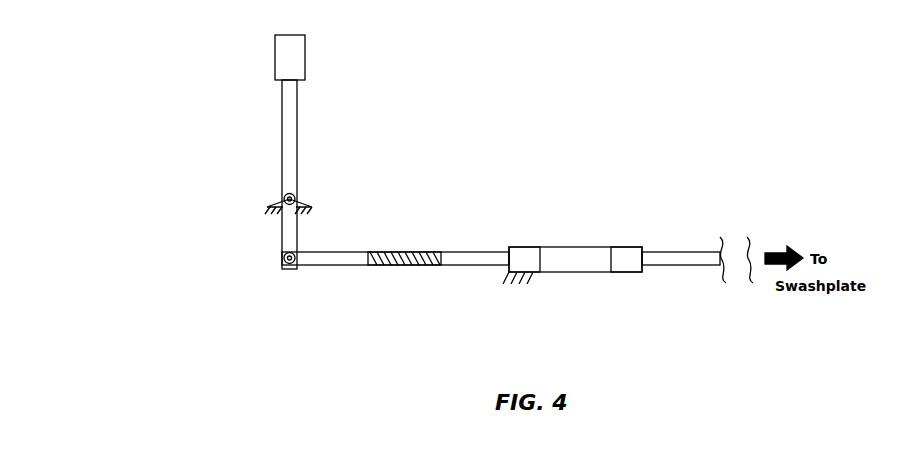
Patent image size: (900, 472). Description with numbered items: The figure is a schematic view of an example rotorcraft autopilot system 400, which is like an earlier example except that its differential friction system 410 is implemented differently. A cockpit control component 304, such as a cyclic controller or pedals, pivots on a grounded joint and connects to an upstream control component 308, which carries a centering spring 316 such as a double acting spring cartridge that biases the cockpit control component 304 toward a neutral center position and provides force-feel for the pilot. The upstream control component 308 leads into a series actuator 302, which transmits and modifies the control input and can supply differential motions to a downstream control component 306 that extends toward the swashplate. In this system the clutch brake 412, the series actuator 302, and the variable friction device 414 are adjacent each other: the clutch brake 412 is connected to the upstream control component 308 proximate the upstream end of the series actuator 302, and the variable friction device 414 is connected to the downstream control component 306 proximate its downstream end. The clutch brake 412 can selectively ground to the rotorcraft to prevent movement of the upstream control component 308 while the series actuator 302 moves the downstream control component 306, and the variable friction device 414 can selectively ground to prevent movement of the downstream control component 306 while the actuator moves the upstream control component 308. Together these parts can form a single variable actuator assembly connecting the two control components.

The rotorcraft autopilot system 400 is at (182, 135).
The cockpit control component 304 is at (298, 123).
The upstream control component 308 is at (449, 266).
The centering spring 316 is at (397, 250).
The series actuator 302 is at (578, 260).
The clutch brake 412 is at (525, 247).
The variable friction device 414 is at (630, 247).
The differential friction system 410 is at (578, 176).
The downstream control component 306 is at (690, 266).